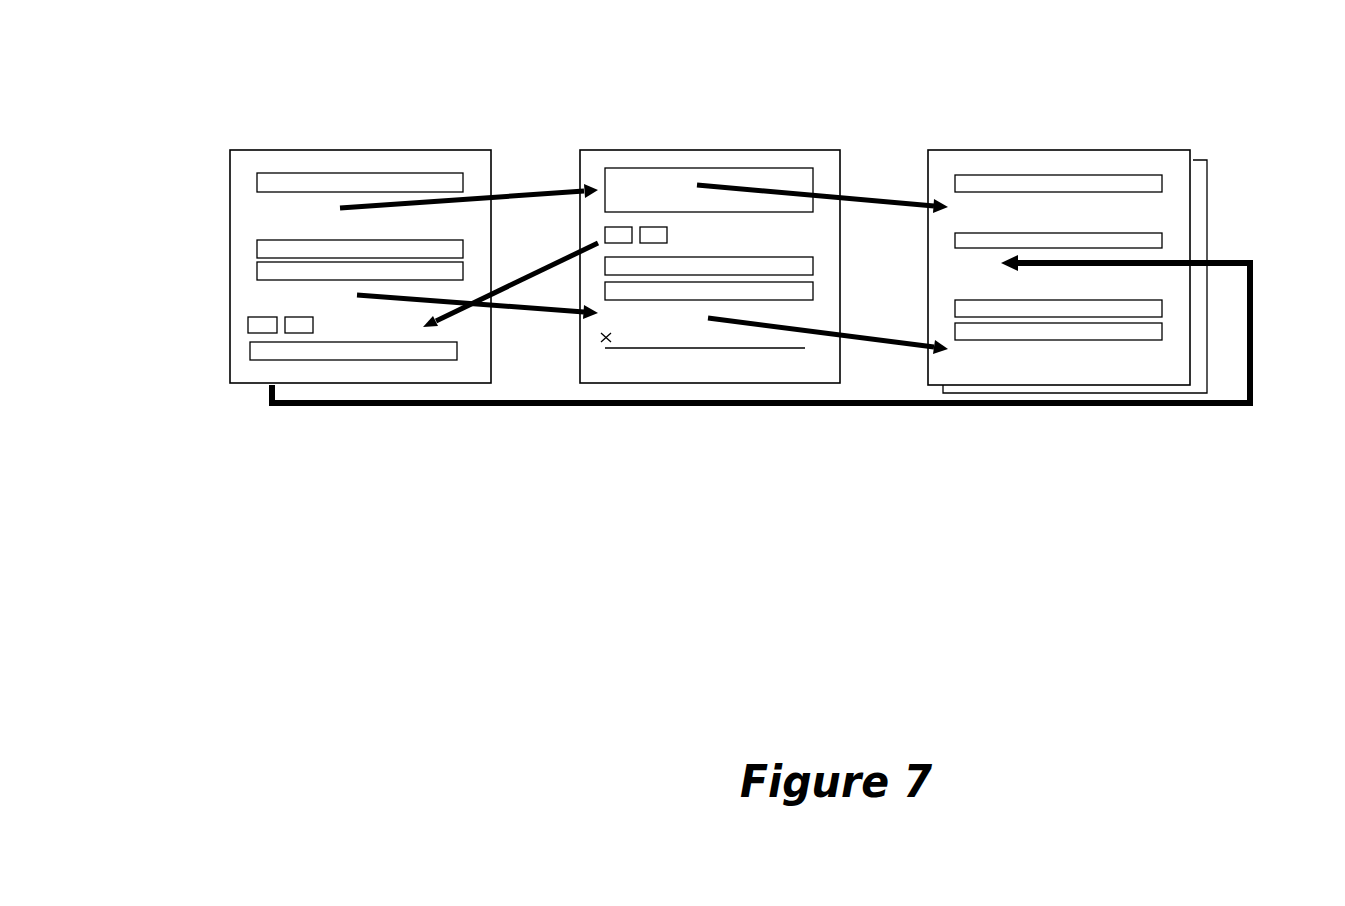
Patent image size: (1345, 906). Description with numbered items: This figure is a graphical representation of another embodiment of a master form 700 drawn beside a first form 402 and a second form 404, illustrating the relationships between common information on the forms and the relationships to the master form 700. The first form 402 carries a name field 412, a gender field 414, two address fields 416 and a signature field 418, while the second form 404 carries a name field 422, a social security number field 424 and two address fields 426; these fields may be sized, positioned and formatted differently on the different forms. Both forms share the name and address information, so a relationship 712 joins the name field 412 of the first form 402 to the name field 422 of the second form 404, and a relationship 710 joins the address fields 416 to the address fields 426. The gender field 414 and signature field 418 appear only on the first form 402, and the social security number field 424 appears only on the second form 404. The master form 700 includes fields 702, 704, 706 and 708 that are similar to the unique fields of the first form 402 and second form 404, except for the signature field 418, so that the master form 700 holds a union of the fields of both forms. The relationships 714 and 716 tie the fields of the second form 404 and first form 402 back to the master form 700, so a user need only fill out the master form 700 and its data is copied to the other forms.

The master form 700 is at (238, 383).
The name field of master form 702 is at (257, 183).
The address fields of master form 704 is at (257, 268).
The gender field of master form 706 is at (248, 323).
The SSN field of master form 708 is at (250, 352).
The relationship between common information 710 is at (422, 300).
The relationship between common information 712 is at (464, 195).
The relationship to master form 714 is at (1207, 403).
The relationship to master form 716 is at (455, 322).
The first form 402 is at (762, 383).
The name field 412 is at (605, 178).
The gender field 414 is at (605, 236).
The address fields 416 is at (607, 294).
The signature field 418 is at (600, 340).
The second form 404 is at (1075, 393).
The name field 422 is at (1163, 183).
The social security number field 424 is at (1163, 243).
The address fields 426 is at (1163, 330).